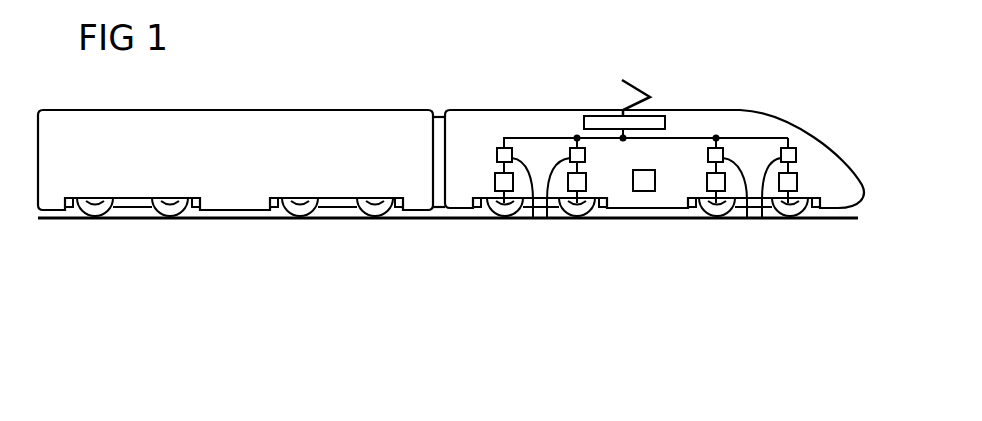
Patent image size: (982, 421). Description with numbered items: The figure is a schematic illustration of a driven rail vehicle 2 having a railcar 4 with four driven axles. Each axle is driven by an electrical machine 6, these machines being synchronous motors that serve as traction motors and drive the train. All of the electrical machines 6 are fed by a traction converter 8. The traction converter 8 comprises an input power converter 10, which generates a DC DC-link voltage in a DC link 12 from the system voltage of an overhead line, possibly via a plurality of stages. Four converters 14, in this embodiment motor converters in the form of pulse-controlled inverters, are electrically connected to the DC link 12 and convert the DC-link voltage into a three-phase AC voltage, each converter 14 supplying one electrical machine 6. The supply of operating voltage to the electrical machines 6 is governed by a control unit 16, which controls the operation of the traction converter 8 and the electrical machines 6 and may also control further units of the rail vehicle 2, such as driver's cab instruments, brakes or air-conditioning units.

The rail vehicle 2 is at (451, 159).
The railcar 4 is at (467, 110).
The electrical machine 6 is at (505, 216).
The traction converter 8 is at (557, 130).
The input power converter 10 is at (596, 116).
The DC link 12 is at (692, 137).
The converter 14 is at (533, 218).
The control unit 16 is at (645, 191).